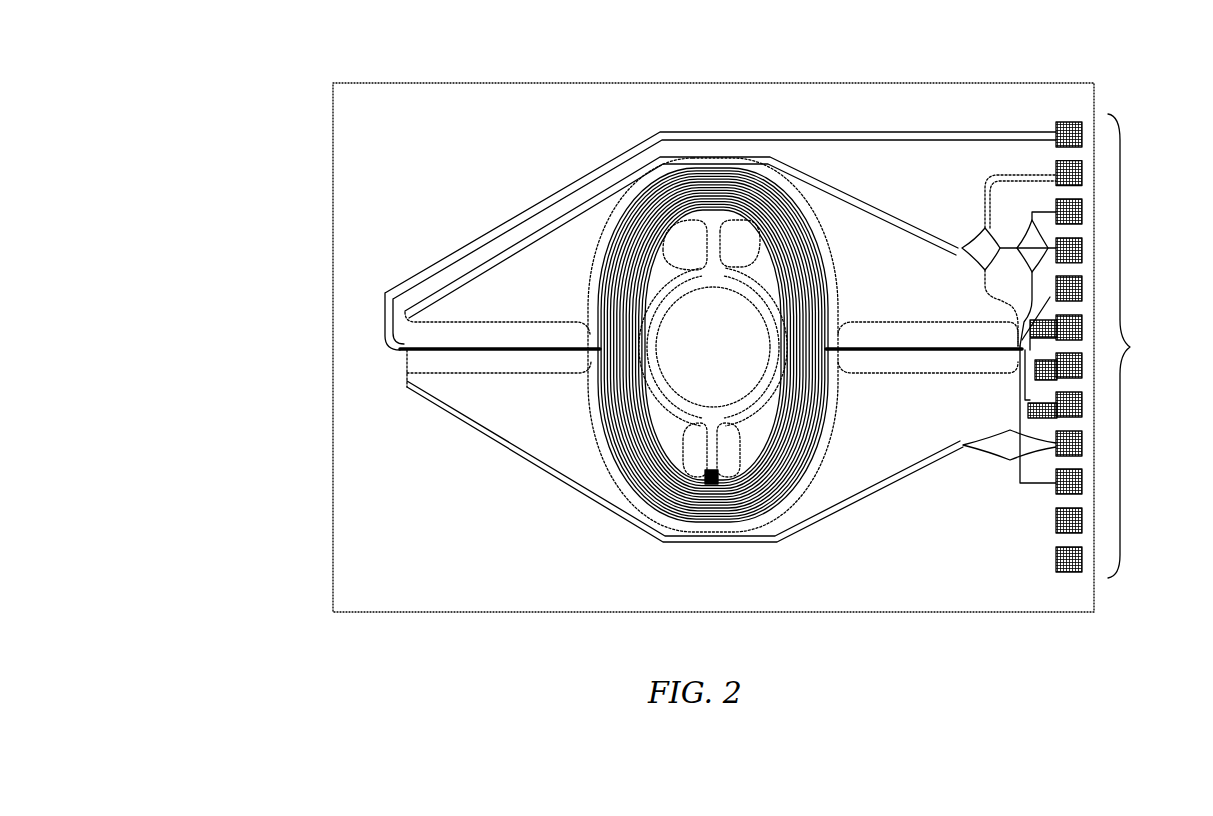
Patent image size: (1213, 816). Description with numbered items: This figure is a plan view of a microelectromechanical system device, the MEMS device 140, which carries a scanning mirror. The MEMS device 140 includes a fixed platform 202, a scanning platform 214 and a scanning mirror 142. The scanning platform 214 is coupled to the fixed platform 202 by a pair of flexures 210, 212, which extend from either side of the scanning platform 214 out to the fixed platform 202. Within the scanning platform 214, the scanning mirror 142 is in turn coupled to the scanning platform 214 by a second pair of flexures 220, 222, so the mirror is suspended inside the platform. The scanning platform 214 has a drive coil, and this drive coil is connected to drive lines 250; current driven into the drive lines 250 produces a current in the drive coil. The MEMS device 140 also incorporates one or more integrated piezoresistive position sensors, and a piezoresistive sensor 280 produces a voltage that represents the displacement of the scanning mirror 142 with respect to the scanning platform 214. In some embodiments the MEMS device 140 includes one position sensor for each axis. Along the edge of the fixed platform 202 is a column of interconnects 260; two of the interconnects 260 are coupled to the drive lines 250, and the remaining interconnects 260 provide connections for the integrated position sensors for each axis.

The MEMS device 140 is at (242, 127).
The fixed platform 202 is at (441, 165).
The flexure 210 is at (483, 349).
The flexure 212 is at (901, 349).
The scanning platform 214 is at (818, 443).
The scanning mirror 142 is at (727, 359).
The flexure 220 is at (720, 230).
The flexure 222 is at (720, 463).
The piezoresistive sensor 280 is at (708, 472).
The drive lines 250 is at (982, 192).
The interconnects 260 is at (1131, 345).